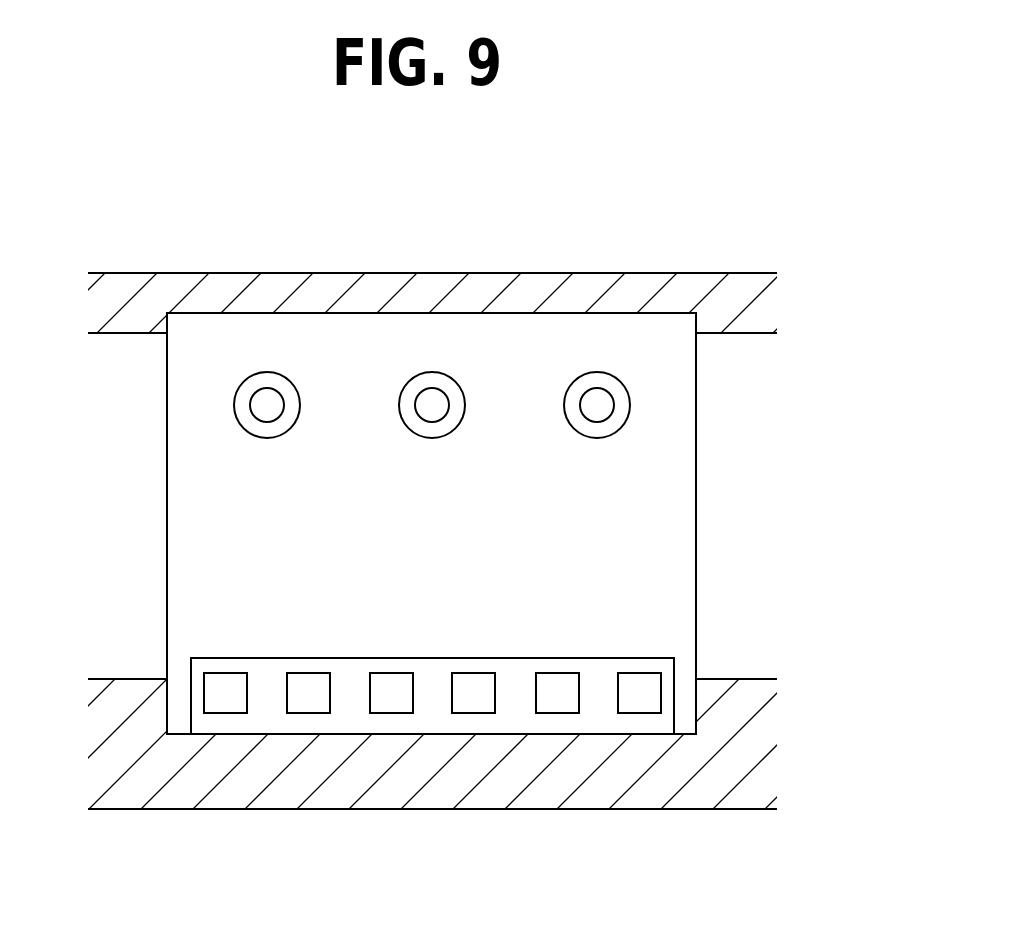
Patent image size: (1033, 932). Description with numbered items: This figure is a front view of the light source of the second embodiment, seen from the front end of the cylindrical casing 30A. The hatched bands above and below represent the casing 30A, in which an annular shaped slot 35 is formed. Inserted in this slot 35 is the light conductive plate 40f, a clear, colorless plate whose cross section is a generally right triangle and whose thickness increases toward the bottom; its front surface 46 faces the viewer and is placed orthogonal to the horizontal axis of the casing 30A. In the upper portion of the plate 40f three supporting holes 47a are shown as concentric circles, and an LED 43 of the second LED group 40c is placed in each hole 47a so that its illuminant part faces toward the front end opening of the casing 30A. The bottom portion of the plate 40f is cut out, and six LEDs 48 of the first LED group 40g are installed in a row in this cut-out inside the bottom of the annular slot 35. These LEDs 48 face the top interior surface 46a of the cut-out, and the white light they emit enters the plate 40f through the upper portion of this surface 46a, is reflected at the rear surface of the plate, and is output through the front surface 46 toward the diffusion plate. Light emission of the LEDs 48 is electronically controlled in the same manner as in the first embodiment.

The cylindrical casing 30A is at (680, 815).
The annular shaped slot 35 is at (168, 703).
The second LED group 40c is at (633, 390).
The light conductive plate 40f is at (700, 393).
The first LED group 40g is at (682, 667).
The LED 43 is at (262, 403).
The front surface 46 is at (652, 522).
The top interior surface 46a is at (277, 658).
The supporting hole 47a is at (257, 382).
The LED 48 is at (225, 697).